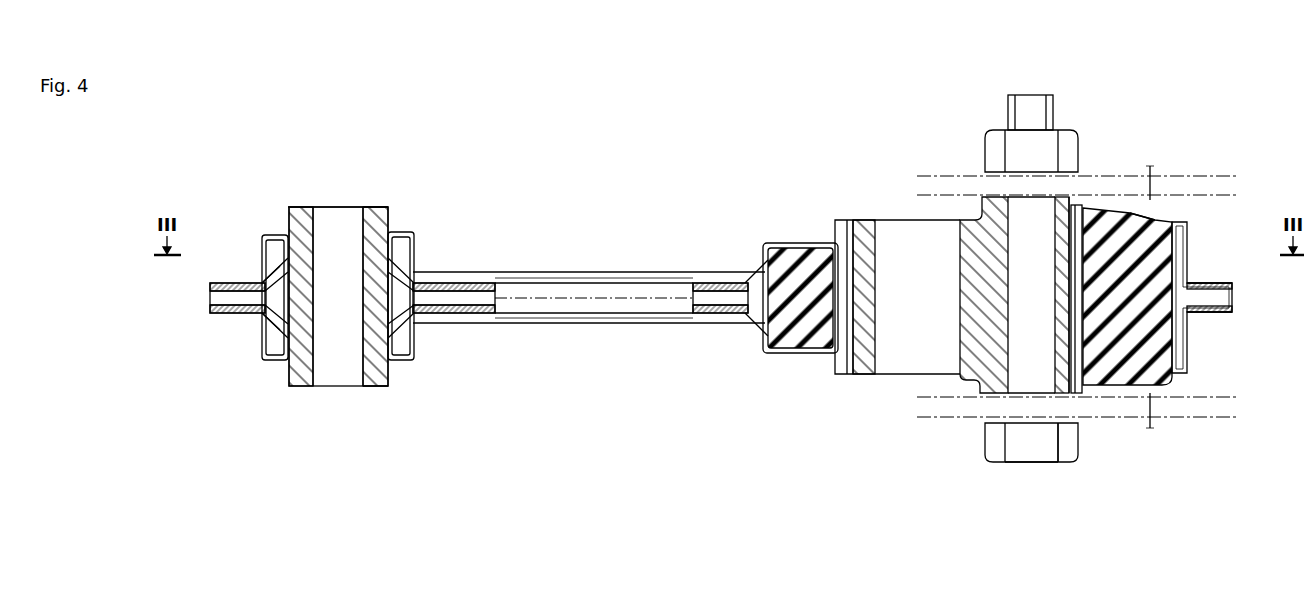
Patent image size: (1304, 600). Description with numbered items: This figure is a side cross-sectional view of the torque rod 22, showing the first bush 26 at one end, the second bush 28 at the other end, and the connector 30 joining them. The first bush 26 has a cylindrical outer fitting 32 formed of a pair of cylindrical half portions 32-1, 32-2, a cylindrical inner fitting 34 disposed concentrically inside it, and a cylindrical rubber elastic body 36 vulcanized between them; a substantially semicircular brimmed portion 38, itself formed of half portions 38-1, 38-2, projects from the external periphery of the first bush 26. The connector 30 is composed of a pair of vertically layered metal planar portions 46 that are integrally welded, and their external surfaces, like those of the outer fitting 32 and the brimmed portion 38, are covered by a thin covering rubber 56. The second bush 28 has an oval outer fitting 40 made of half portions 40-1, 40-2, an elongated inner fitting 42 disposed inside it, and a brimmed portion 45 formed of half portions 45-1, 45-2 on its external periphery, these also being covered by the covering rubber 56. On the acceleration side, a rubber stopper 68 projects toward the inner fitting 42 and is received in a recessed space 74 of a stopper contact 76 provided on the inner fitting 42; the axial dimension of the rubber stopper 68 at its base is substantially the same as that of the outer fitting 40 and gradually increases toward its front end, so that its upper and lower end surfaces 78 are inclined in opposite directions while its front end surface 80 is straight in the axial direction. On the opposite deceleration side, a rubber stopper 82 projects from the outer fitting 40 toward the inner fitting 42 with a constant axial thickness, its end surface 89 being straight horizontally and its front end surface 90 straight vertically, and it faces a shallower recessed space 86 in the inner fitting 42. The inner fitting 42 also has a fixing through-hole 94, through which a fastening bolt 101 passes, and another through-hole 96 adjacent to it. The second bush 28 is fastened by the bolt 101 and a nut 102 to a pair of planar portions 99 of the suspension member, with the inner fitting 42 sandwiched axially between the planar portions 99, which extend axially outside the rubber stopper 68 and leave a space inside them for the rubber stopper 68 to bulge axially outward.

The torque rod 22 is at (752, 100).
The first bush 26 is at (339, 188).
The second bush 28 is at (1168, 215).
The connector 30 is at (586, 262).
The outer fitting 32 is at (266, 240).
The half portion 32-1 is at (372, 206).
The half portion 32-2 is at (376, 372).
The inner fitting 34 is at (301, 206).
The rubber elastic body 36 is at (430, 334).
The brimmed portion 38 is at (233, 314).
The half portion 38-1 is at (248, 286).
The half portion 38-2 is at (250, 316).
The outer fitting 40 is at (1186, 226).
The half portion 40-1 is at (1145, 170).
The half portion 40-2 is at (1155, 420).
The inner fitting 42 is at (970, 212).
The brimmed portion 45 is at (1188, 282).
The half portion 45-1 is at (1226, 282).
The half portion 45-2 is at (1220, 316).
The planar portion 46 is at (480, 286).
The covering rubber 56 is at (212, 300).
The rubber stopper 68 is at (1070, 296).
The recessed space 74 is at (1080, 412).
The stopper contact 76 is at (1066, 326).
The end surface 78 is at (1097, 204).
The front end surface 80 is at (1070, 250).
The rubber stopper 82 is at (814, 280).
The recessed space 86 is at (836, 362).
The end surface 89 is at (790, 244).
The front end surface 90 is at (866, 219).
The fixing through-hole 94 is at (1018, 404).
The through-hole 96 is at (884, 375).
The planar portion 99 is at (1172, 180).
The fastening bolt 101 is at (1034, 466).
The nut 102 is at (1045, 142).